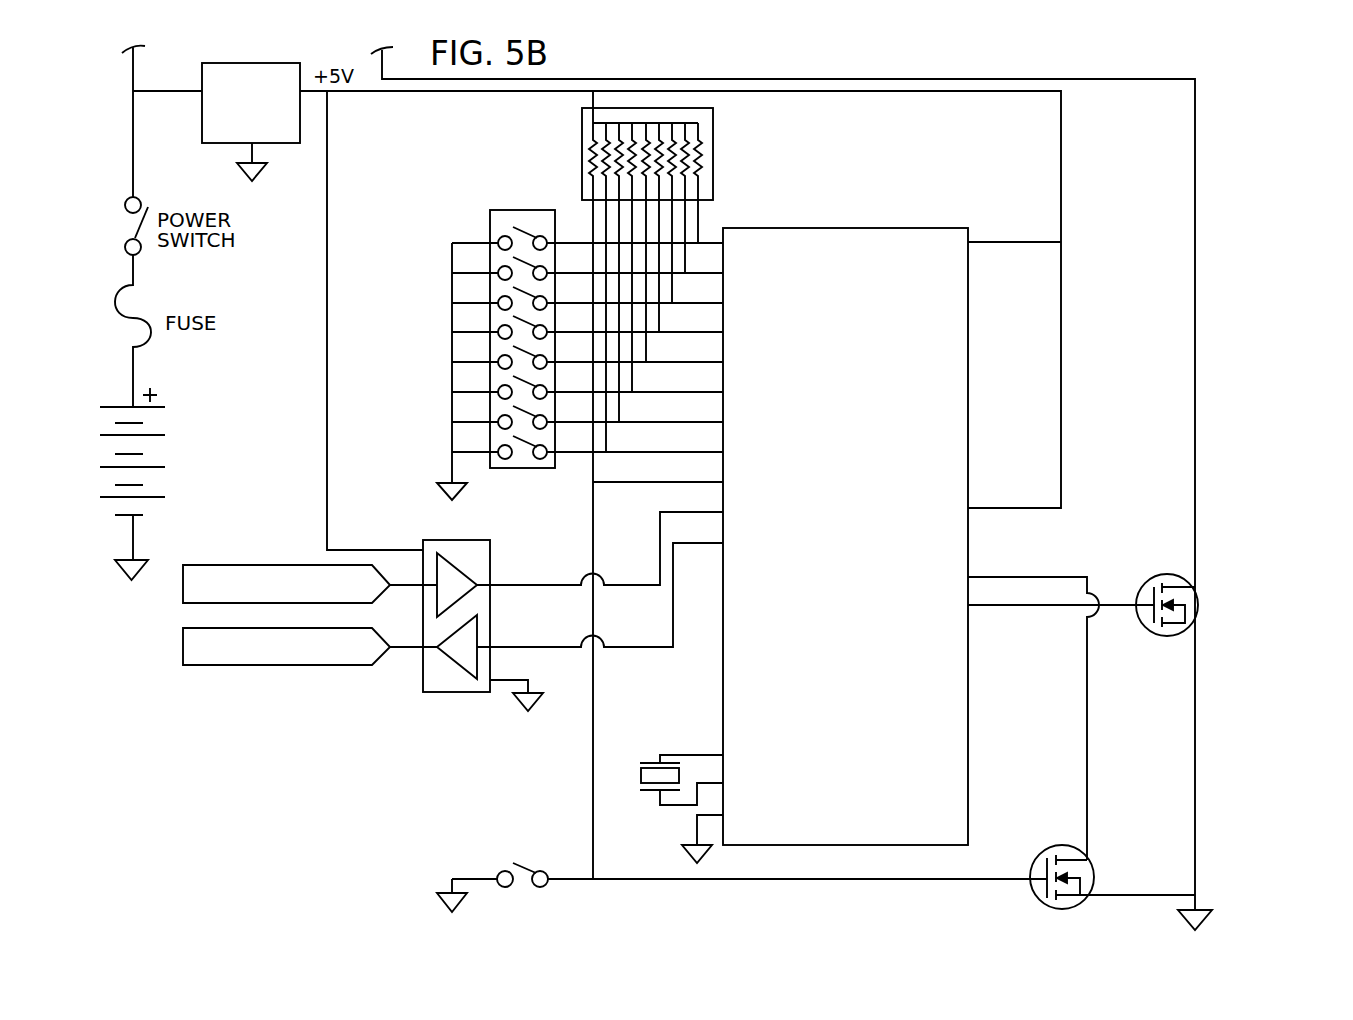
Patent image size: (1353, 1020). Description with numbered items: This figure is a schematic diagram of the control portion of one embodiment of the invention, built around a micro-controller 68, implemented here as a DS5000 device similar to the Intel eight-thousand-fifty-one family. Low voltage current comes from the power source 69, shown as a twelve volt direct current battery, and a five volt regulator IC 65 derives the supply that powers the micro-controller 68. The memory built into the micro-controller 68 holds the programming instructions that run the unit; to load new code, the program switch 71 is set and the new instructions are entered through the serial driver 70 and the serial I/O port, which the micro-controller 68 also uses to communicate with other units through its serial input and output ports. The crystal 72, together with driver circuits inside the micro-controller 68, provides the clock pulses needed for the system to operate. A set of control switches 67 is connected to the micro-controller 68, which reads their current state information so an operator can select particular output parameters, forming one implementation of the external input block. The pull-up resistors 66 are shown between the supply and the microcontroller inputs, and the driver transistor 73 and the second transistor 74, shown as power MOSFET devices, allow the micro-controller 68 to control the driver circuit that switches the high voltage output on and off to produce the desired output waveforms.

The 5 volt regulator IC 65 is at (202, 76).
The pull-up resistors 66 is at (582, 140).
The control switches 67 is at (490, 229).
The micro-controller 68 is at (940, 228).
The power source 69 is at (158, 418).
The serial driver 70 is at (478, 540).
The program switch 71 is at (512, 888).
The crystal 72 is at (638, 773).
The driver transistor 73 is at (1168, 637).
The ZVNL-110V MOSFET transistor 74 is at (1093, 872).